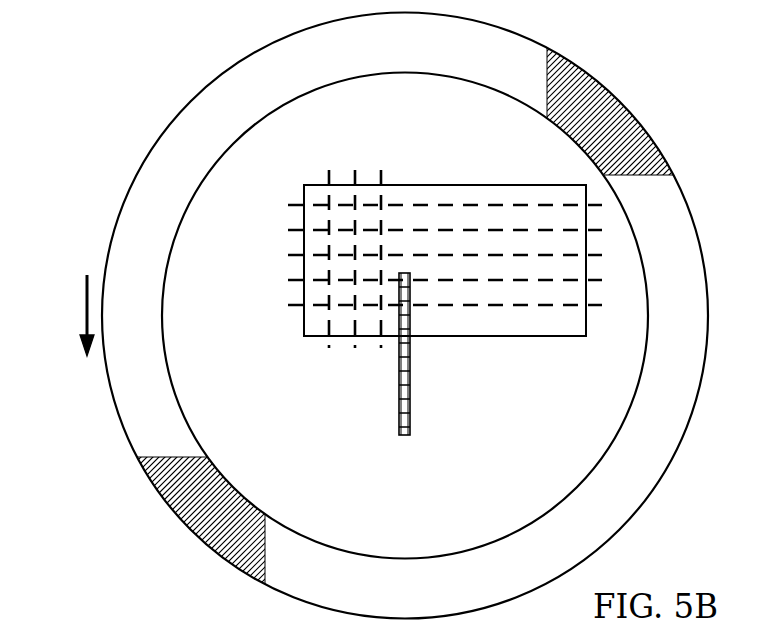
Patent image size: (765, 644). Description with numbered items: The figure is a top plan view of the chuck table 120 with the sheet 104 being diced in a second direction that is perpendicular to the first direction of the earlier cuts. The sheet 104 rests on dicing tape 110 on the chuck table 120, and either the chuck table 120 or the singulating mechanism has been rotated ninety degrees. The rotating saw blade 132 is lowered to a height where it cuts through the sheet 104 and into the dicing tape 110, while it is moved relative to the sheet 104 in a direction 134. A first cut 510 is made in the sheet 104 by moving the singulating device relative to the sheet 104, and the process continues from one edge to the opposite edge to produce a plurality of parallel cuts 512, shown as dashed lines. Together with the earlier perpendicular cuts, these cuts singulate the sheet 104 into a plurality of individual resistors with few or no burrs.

The sheet 104 is at (486, 190).
The dicing tape 110 is at (405, 82).
The chuck table 120 is at (200, 108).
The saw blade 132 is at (399, 380).
The direction 134 is at (85, 309).
The first cut 510 is at (328, 178).
The parallel cuts 512 is at (354, 178).